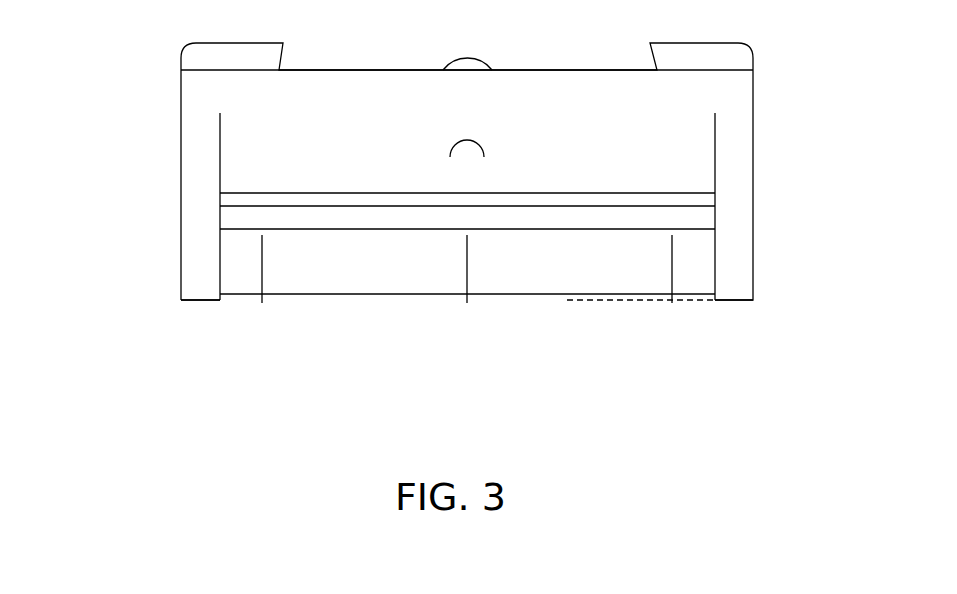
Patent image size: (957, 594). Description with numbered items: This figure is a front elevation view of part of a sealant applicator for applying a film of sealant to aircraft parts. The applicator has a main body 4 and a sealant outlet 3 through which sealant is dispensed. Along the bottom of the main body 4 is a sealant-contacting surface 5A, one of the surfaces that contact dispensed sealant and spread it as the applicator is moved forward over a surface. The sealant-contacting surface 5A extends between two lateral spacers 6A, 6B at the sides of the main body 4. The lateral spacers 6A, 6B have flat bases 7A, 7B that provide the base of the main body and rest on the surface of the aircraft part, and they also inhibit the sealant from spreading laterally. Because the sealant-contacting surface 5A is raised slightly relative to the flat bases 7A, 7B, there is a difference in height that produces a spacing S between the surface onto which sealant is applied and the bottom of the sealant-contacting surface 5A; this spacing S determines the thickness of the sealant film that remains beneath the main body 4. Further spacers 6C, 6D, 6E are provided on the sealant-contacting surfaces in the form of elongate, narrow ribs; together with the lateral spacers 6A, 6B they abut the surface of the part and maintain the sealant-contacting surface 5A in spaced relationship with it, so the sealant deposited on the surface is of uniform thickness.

The sealant outlet 3 is at (522, 206).
The main body 4 is at (399, 307).
The sealant-contacting surface 5A is at (340, 277).
The lateral spacer 6A is at (202, 218).
The lateral spacer 6B is at (739, 213).
The spacer 6C is at (672, 252).
The spacer 6D is at (466, 255).
The spacer 6E is at (262, 258).
The flat base 7A is at (734, 295).
The flat base 7B is at (192, 302).
The spacing S is at (578, 300).